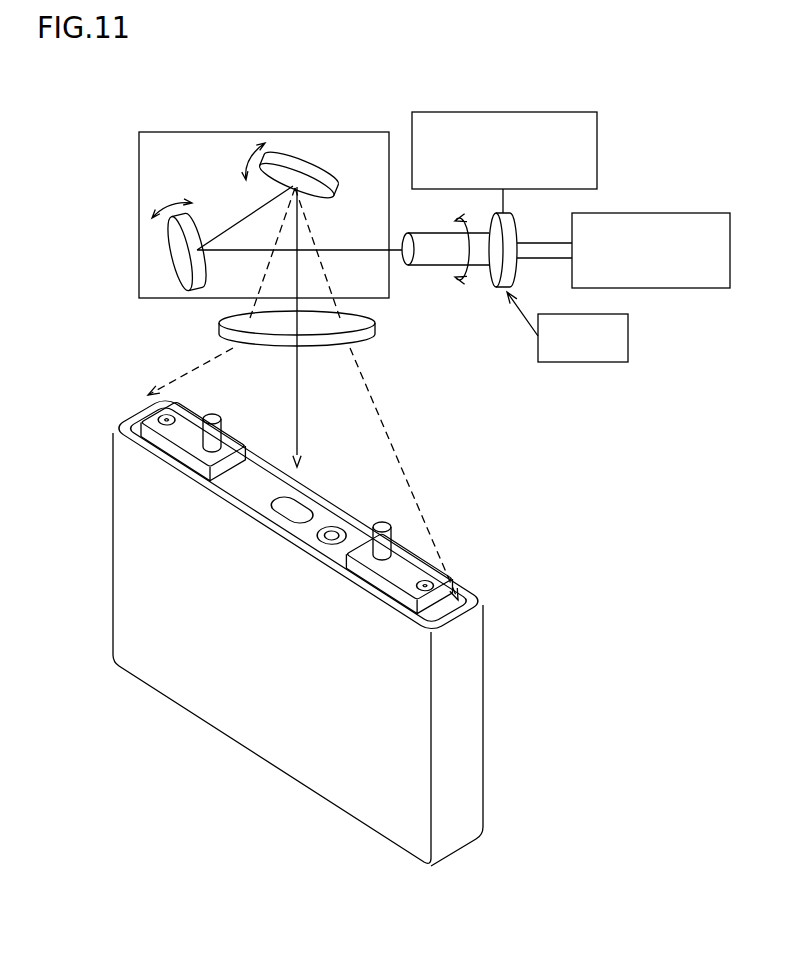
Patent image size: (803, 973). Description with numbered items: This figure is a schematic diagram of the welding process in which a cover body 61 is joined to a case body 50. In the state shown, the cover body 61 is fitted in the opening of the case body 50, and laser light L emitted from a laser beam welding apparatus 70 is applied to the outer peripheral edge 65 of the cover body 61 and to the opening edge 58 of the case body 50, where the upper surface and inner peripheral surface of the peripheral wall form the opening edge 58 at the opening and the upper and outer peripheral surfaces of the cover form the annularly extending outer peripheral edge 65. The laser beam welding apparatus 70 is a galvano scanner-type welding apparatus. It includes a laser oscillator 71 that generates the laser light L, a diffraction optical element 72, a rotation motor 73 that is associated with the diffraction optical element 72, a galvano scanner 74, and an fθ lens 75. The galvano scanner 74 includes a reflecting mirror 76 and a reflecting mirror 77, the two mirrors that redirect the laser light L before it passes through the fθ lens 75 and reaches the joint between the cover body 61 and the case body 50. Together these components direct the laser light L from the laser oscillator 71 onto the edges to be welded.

The case body 50 is at (460, 712).
The opening edge 58 is at (257, 496).
The cover body 61 is at (237, 485).
The outer peripheral edge 65 is at (273, 537).
The laser beam welding apparatus 70 is at (398, 96).
The laser oscillator 71 is at (678, 213).
The diffraction optical element 72 is at (583, 364).
The rotation motor 73 is at (543, 112).
The galvano scanner 74 is at (181, 131).
The fθ lens 75 is at (388, 348).
The reflecting mirror 76 is at (175, 244).
The reflecting mirror 77 is at (306, 163).
The laser light L is at (542, 243).